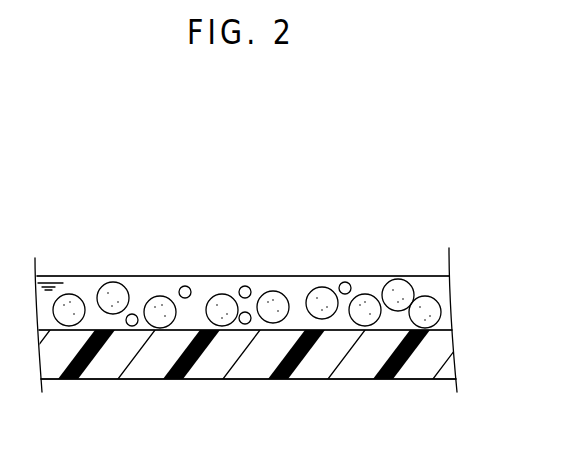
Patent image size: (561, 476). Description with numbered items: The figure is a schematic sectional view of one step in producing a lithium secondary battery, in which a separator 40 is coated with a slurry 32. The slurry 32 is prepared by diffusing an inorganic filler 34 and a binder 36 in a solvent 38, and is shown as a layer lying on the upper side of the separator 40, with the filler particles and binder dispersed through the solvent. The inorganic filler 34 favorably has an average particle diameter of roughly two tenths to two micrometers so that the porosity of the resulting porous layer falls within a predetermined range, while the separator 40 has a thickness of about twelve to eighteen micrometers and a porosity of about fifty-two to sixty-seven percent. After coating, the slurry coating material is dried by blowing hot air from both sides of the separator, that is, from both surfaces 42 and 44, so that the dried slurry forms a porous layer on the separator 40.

The slurry 32 is at (452, 300).
The inorganic filler 34 is at (222, 300).
The binder 36 is at (185, 286).
The solvent 38 is at (423, 300).
The separator 40 is at (447, 351).
The surface of the separator 42 is at (93, 330).
The surface of the separator 44 is at (92, 380).